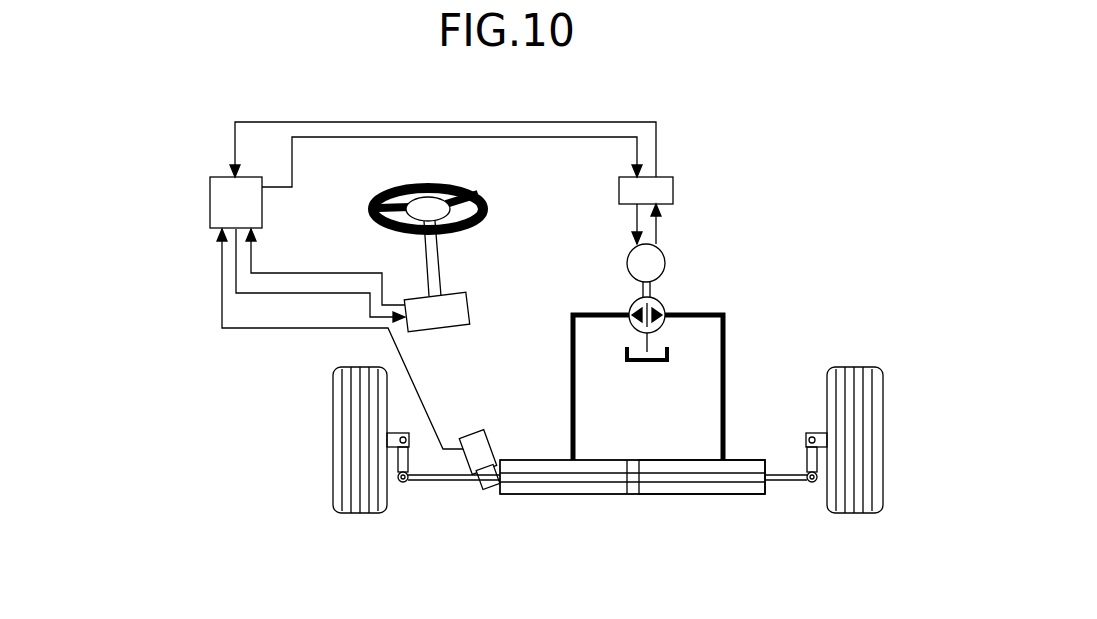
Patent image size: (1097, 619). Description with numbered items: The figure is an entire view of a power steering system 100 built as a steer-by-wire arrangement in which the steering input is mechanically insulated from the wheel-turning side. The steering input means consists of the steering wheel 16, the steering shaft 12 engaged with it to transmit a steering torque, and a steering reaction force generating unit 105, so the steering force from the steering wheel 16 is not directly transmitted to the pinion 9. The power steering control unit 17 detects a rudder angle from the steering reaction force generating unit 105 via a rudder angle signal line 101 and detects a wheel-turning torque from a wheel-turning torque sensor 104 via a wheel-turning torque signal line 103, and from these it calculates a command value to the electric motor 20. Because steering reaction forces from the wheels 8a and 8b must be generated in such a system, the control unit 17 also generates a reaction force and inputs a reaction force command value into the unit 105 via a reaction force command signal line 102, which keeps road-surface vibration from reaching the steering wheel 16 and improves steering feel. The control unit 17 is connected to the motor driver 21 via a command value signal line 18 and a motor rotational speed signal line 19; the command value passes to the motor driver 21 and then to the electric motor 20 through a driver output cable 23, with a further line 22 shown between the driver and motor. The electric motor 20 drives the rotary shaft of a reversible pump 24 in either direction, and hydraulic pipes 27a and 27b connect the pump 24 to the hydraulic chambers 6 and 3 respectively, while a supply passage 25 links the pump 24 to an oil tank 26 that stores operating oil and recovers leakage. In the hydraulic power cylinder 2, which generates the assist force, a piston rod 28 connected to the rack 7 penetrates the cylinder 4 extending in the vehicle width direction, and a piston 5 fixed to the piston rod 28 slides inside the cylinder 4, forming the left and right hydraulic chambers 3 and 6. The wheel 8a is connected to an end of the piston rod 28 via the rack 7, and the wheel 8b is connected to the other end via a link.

The hydraulic power cylinder 2 is at (710, 508).
The hydraulic chamber 3 is at (746, 492).
The cylinder 4 is at (671, 496).
The piston 5 is at (633, 496).
The hydraulic chamber 6 is at (565, 497).
The rack 7 is at (432, 483).
The wheel 8a is at (356, 514).
The wheel 8b is at (856, 514).
The pinion 9 is at (489, 490).
The steering shaft 12 is at (442, 270).
The steering wheel 16 is at (392, 190).
The power steering control unit 17 is at (210, 200).
The command value signal line 18 is at (524, 140).
The motor rotational speed signal line 19 is at (608, 122).
The electric motor 20 is at (666, 263).
The motor driver 21 is at (675, 190).
The motor rotation signal line 22 is at (658, 232).
The driver output cable 23 is at (634, 218).
The reversible pump 24 is at (663, 303).
The supply passage 25 is at (657, 346).
The oil tank 26 is at (647, 365).
The hydraulic pipe 27a is at (573, 372).
The hydraulic pipe 27b is at (725, 364).
The piston rod 28 is at (786, 484).
The power steering system 100 is at (812, 217).
The rudder angle signal line 101 is at (300, 272).
The reaction force command signal line 102 is at (297, 296).
The wheel-turning torque signal line 103 is at (240, 331).
The wheel-turning torque sensor 104 is at (495, 445).
The steering reaction force generating unit 105 is at (472, 311).